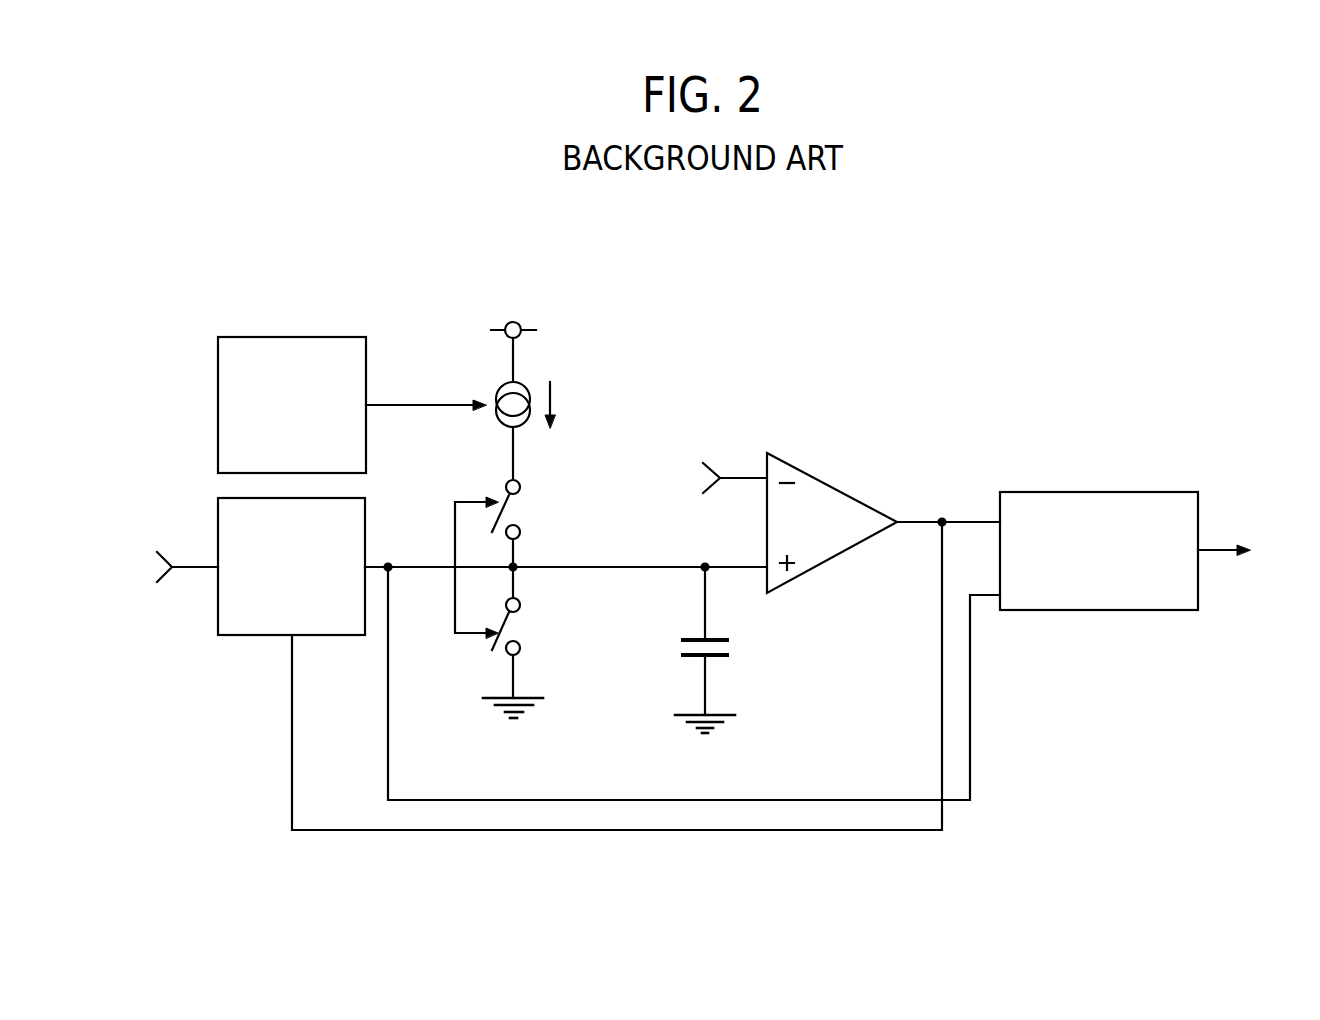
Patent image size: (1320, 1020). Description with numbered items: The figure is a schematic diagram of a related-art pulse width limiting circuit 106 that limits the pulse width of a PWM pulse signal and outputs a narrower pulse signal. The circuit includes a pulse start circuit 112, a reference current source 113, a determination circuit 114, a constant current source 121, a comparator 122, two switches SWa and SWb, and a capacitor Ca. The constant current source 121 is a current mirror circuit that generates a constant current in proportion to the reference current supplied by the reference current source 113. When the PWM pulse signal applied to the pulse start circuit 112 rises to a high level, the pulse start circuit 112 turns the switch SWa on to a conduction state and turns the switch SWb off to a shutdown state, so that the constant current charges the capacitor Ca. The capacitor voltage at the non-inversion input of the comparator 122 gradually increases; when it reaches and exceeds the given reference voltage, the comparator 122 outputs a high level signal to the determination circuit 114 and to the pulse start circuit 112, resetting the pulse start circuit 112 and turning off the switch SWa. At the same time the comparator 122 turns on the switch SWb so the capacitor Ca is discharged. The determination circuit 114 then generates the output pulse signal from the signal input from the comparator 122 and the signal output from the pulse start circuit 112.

The pulse width limiting circuit 106 is at (1024, 313).
The pulse start circuit 112 is at (343, 636).
The reference current source 113 is at (346, 337).
The determination circuit 114 is at (1177, 490).
The constant current source 121 is at (497, 390).
The comparator 122 is at (832, 483).
The switch SWa is at (532, 509).
The switch SWb is at (532, 626).
The capacitor Ca is at (718, 650).